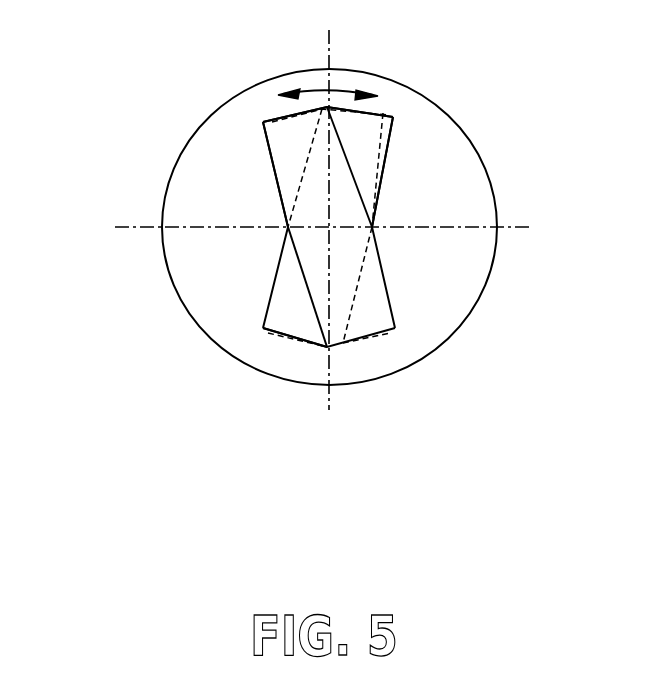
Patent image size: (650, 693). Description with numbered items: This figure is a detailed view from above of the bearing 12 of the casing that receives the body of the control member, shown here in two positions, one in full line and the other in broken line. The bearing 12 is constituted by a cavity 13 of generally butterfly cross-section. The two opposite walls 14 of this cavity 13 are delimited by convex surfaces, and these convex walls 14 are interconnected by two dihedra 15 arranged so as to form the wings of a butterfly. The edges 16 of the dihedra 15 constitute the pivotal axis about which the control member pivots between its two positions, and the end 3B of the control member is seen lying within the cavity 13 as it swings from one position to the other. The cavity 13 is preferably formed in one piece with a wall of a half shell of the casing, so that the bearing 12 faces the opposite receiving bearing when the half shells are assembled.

The bearing 12 is at (453, 300).
The cavity 13 is at (298, 342).
The opposite walls 14 is at (377, 112).
The dihedra 15 is at (380, 207).
The edges 16 is at (288, 227).
The twisted blade tip 3B is at (380, 283).